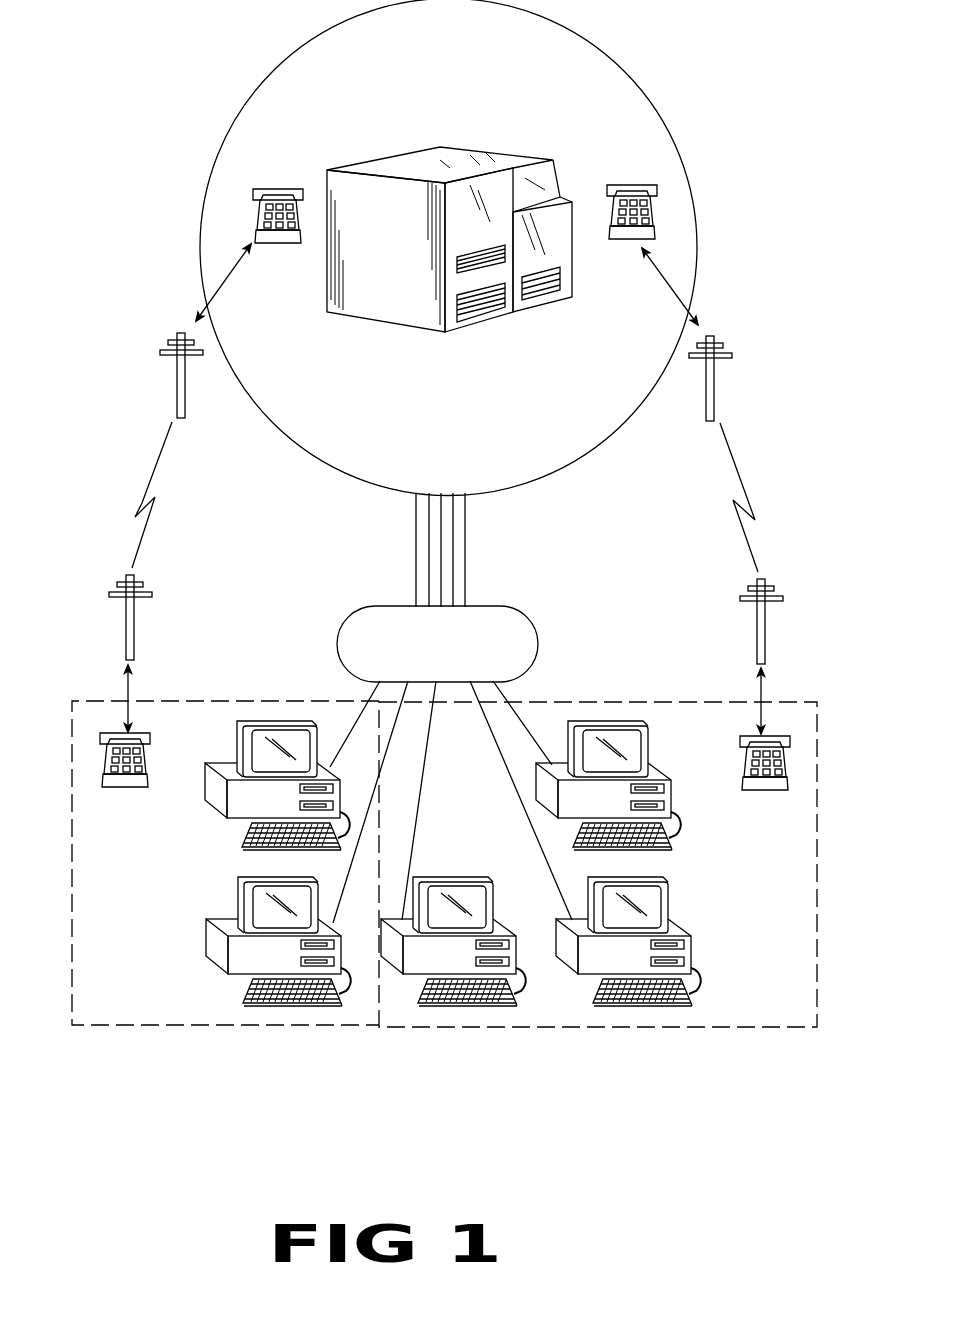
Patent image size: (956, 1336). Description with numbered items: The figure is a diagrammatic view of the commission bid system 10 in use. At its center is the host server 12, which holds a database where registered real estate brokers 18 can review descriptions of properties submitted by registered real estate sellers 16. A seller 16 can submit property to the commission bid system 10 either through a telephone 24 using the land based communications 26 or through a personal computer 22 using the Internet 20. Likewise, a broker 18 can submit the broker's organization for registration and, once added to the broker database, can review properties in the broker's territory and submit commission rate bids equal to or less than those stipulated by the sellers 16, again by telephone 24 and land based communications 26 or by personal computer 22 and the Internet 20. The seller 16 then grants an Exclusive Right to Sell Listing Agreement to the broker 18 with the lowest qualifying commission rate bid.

The commission bid system 10 is at (247, 87).
The host server 12 is at (503, 163).
The seller 16 is at (152, 997).
The broker 18 is at (798, 998).
The Internet 20 is at (358, 618).
The personal computer 22 is at (215, 762).
The telephone 24 is at (285, 185).
The land based communications 26 is at (143, 540).